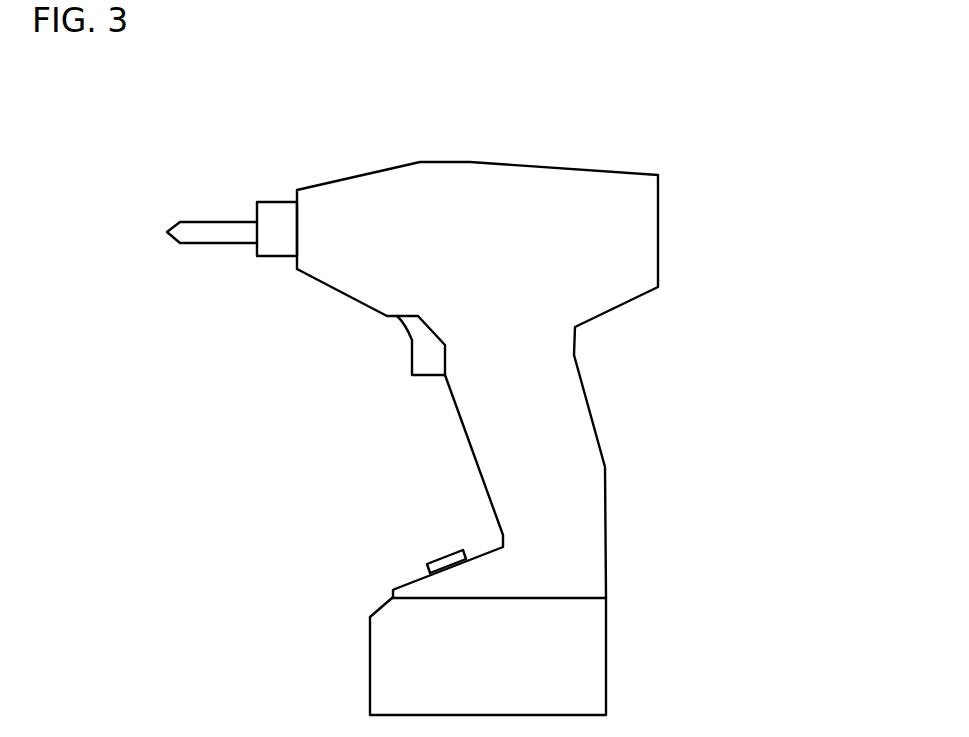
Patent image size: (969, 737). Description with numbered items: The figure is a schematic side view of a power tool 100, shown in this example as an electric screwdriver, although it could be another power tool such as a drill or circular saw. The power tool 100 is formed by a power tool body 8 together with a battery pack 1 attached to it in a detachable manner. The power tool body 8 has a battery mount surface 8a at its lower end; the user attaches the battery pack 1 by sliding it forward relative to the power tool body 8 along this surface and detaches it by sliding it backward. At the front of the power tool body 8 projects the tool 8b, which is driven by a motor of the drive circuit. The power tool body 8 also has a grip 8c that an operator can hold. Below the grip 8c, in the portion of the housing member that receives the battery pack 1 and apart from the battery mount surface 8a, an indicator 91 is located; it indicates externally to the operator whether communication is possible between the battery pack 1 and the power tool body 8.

The power tool 100 is at (591, 46).
The power tool body 8 is at (568, 180).
The battery mount surface 8a is at (538, 602).
The tool 8b is at (220, 233).
The grip 8c is at (590, 475).
The battery pack 1 is at (597, 653).
The indicator 91 is at (443, 552).